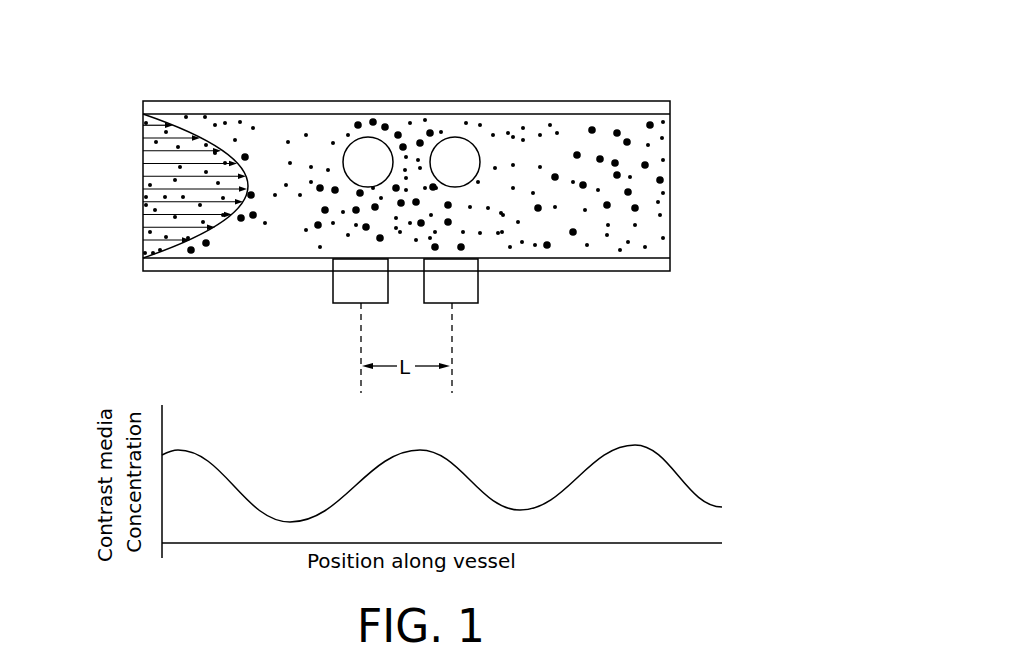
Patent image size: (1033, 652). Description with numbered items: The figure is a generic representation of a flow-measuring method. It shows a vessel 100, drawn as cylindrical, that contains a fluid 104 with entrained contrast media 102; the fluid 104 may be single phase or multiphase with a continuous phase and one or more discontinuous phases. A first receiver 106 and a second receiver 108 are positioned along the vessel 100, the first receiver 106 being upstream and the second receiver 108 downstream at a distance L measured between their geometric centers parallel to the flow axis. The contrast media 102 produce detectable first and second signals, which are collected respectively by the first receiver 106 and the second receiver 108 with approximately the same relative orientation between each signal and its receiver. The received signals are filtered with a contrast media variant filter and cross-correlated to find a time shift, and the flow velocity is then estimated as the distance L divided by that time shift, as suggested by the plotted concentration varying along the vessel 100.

The vessel 100 is at (648, 76).
The contrast media 102 is at (320, 141).
The fluid 104 is at (268, 150).
The first receiver 106 is at (318, 293).
The second receiver 108 is at (492, 291).